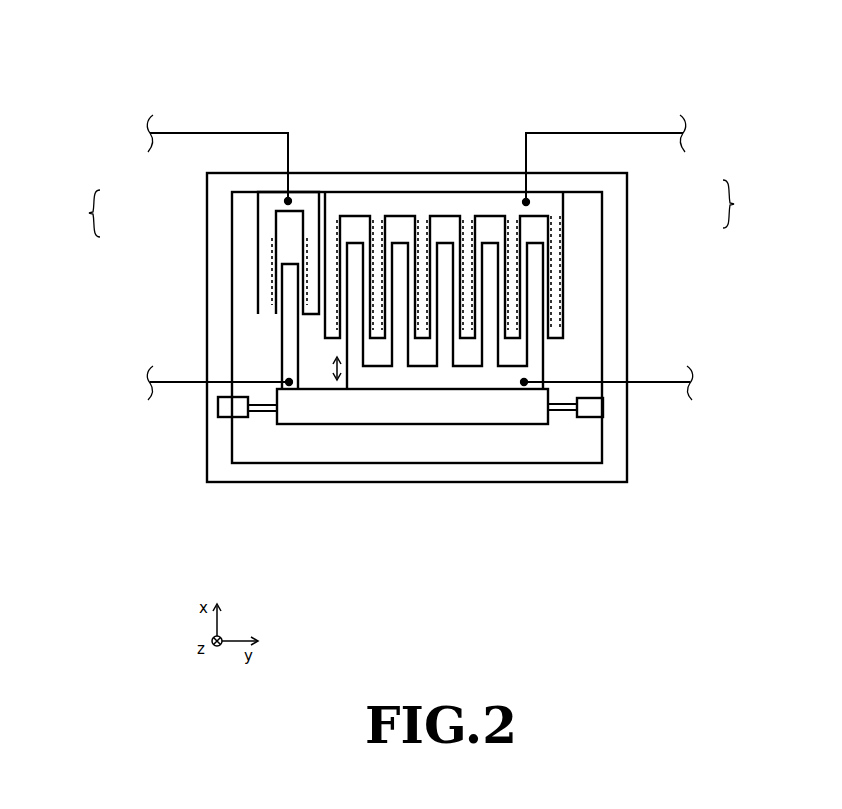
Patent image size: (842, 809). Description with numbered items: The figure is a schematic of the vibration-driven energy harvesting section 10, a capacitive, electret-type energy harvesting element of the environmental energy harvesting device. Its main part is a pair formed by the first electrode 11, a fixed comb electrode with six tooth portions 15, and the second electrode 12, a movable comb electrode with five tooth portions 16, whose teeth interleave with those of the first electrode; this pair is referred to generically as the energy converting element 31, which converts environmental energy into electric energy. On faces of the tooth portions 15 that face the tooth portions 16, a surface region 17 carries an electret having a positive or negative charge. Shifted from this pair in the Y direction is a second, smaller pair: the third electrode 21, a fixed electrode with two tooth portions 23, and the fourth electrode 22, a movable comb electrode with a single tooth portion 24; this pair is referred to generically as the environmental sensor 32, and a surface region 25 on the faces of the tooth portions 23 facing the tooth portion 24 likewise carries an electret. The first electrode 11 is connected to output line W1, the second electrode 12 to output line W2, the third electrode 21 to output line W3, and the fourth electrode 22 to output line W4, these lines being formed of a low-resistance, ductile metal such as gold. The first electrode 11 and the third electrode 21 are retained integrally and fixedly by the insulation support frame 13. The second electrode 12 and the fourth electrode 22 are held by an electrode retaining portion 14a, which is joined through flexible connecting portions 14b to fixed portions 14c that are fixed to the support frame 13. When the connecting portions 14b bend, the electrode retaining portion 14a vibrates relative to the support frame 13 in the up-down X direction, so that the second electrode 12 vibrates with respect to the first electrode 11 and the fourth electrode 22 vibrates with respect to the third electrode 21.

The vibration-driven energy harvesting section 10 is at (171, 49).
The first electrode 11 is at (553, 203).
The second electrode 12 is at (533, 368).
The support frame 13 is at (218, 365).
The electrode retaining portion 14a is at (343, 412).
The connecting portions 14b is at (258, 409).
The fixed portions 14c is at (220, 409).
The tooth portions 15 is at (557, 308).
The tooth portions 16 is at (542, 347).
The surface region 17 is at (553, 273).
The third electrode 21 is at (265, 212).
The fourth electrode 22 is at (290, 357).
The tooth portions 23 is at (263, 258).
The tooth portion 24 is at (288, 333).
The surface region 25 is at (273, 288).
The energy converting element 31 is at (742, 204).
The environmental sensor 32 is at (81, 213).
The output line W1 is at (647, 132).
The output line W2 is at (653, 386).
The output line W3 is at (235, 132).
The output line W4 is at (178, 385).